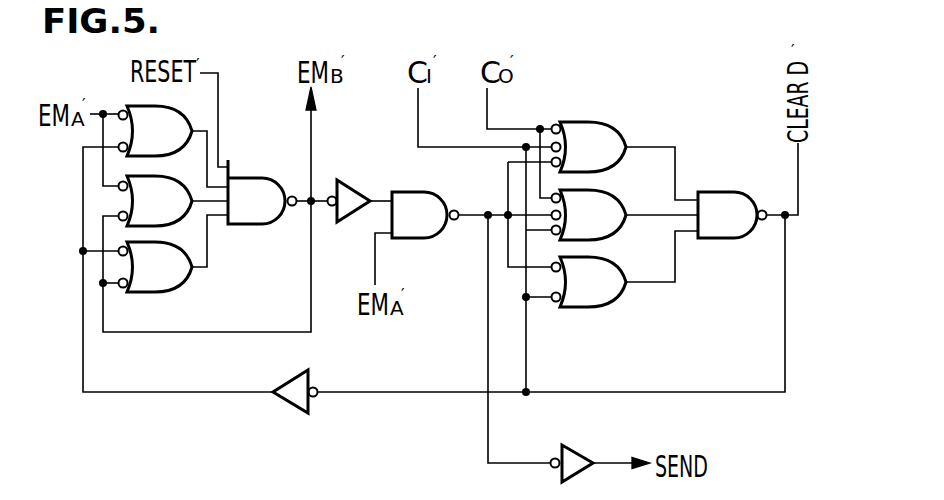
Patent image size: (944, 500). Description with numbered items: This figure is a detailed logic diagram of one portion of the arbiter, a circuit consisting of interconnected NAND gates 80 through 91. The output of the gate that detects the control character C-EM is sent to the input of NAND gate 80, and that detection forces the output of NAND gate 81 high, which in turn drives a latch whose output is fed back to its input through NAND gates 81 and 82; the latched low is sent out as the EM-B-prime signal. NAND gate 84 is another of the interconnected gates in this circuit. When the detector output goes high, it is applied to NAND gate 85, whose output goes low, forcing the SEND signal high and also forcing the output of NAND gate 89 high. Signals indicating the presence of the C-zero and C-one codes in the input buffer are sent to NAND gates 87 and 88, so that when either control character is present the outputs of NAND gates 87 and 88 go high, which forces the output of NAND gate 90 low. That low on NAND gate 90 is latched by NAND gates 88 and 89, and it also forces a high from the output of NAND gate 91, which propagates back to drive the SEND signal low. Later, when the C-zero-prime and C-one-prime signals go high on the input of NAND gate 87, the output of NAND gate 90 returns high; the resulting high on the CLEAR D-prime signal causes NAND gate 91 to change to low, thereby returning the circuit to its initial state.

The NAND gate 80 is at (164, 146).
The NAND gate 81 is at (164, 216).
The NAND gate 82 is at (164, 282).
The NAND gate 84 is at (264, 216).
The NAND gate 85 is at (428, 231).
The NAND gate 87 is at (598, 162).
The NAND gate 88 is at (598, 230).
The NAND gate 89 is at (598, 297).
The NAND gate 90 is at (733, 231).
The NAND gate 91 is at (290, 381).